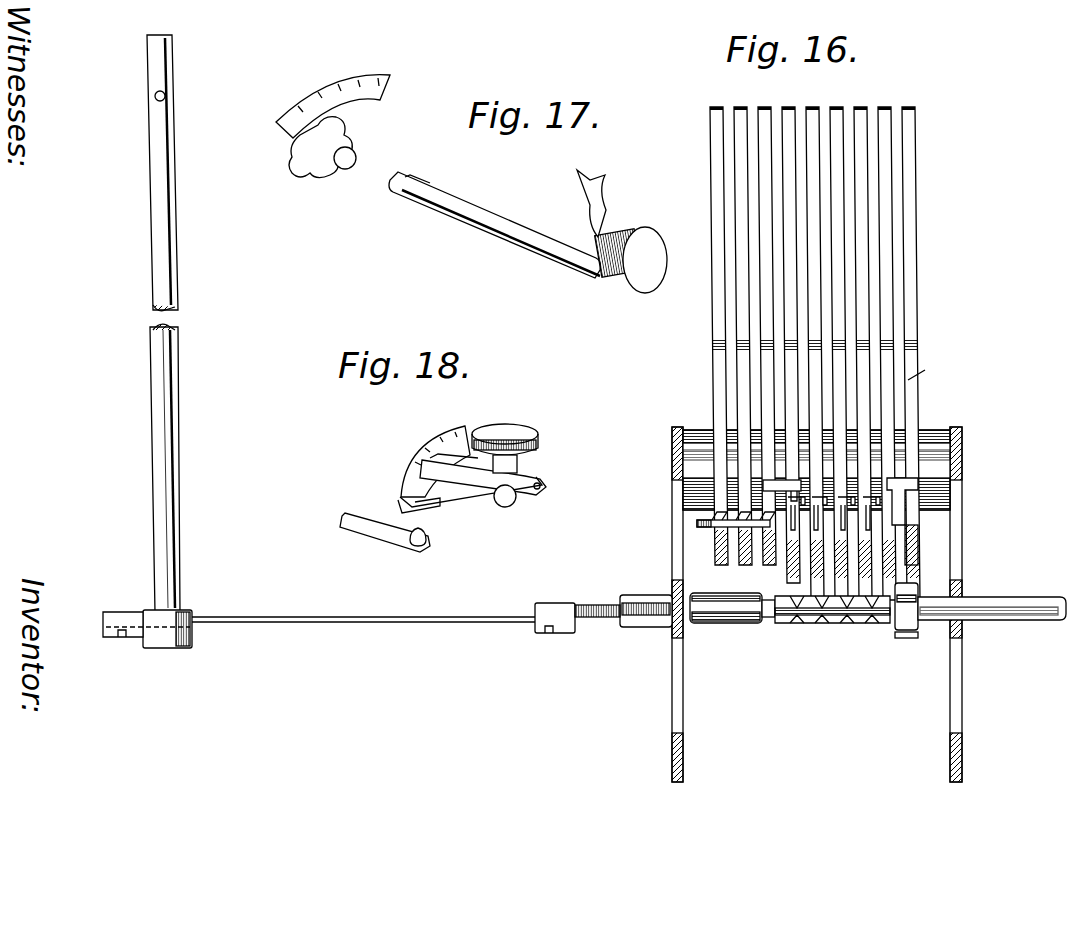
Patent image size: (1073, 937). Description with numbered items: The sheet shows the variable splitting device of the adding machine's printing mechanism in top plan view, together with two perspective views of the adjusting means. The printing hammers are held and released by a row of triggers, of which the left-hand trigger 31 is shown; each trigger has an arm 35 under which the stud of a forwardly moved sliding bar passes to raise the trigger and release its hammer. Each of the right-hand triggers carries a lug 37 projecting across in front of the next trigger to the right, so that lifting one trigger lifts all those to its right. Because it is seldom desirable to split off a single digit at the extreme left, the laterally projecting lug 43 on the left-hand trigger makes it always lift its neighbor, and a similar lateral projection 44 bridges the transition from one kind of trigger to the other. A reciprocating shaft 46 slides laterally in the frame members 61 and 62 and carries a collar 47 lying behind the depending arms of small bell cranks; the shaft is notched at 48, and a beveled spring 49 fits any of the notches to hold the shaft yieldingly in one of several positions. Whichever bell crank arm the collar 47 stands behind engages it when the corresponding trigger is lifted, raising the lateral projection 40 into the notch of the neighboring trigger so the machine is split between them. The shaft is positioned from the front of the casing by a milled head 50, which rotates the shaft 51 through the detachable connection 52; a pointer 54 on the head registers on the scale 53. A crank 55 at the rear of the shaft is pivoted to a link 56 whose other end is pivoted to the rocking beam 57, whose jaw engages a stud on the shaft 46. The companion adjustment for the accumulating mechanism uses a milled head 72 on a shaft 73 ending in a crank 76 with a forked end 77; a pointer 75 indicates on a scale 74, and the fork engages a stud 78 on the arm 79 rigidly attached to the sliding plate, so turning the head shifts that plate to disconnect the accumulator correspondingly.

In FIG. 16, the trigger 31 is at (932, 366).
In FIG. 16, the arm 35 is at (906, 148).
In FIG. 16, the lug 37 is at (722, 528).
In FIG. 16, the lateral projection 40 is at (850, 498).
In FIG. 16, the laterally projecting lug 43 is at (920, 535).
In FIG. 16, the lateral projection 44 is at (780, 487).
In FIG. 16, the reciprocating shaft 46 is at (1010, 610).
In FIG. 16, the collar 47 is at (896, 612).
In FIG. 16, the notches 48 is at (817, 616).
In FIG. 16, the spring 49 is at (723, 608).
In FIG. 17, the milled head 50 is at (631, 260).
In FIG. 16, the shaft 51 is at (178, 457).
In FIG. 17, the detachable connection 52 is at (428, 204).
In FIG. 17, the scale 53 is at (340, 82).
In FIG. 17, the pointer 54 is at (604, 205).
In FIG. 16, the crank 55 is at (135, 610).
In FIG. 16, the link 56 is at (366, 625).
In FIG. 16, the rocking beam 57 is at (590, 600).
In FIG. 16, the frame member 61 is at (966, 587).
In FIG. 16, the frame member 62 is at (671, 590).
In FIG. 18, the milled head 72 is at (512, 425).
In FIG. 18, the shaft 73 is at (520, 502).
In FIG. 18, the scale 74 is at (425, 438).
In FIG. 18, the pointer 75 is at (450, 456).
In FIG. 18, the crank 76 is at (490, 510).
In FIG. 18, the forked end 77 is at (405, 505).
In FIG. 18, the stud 78 is at (432, 552).
In FIG. 18, the arm 79 is at (350, 522).